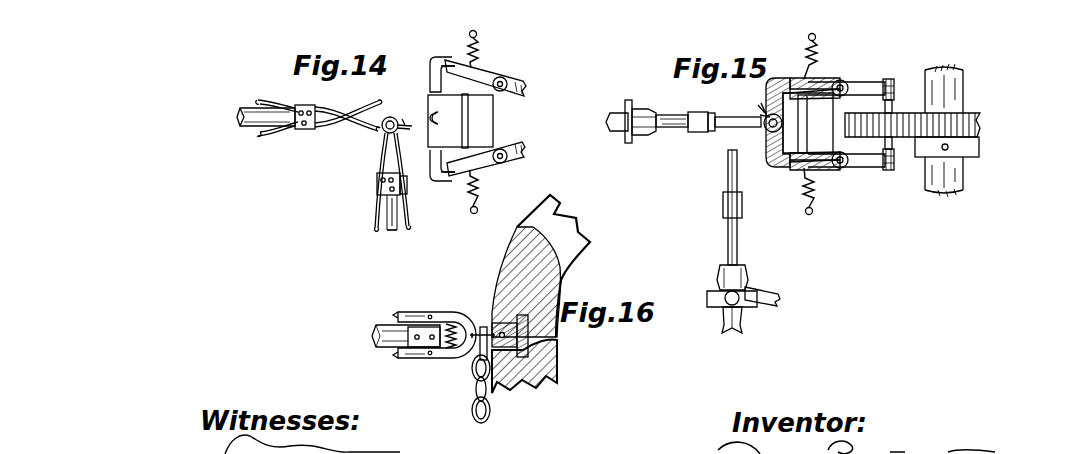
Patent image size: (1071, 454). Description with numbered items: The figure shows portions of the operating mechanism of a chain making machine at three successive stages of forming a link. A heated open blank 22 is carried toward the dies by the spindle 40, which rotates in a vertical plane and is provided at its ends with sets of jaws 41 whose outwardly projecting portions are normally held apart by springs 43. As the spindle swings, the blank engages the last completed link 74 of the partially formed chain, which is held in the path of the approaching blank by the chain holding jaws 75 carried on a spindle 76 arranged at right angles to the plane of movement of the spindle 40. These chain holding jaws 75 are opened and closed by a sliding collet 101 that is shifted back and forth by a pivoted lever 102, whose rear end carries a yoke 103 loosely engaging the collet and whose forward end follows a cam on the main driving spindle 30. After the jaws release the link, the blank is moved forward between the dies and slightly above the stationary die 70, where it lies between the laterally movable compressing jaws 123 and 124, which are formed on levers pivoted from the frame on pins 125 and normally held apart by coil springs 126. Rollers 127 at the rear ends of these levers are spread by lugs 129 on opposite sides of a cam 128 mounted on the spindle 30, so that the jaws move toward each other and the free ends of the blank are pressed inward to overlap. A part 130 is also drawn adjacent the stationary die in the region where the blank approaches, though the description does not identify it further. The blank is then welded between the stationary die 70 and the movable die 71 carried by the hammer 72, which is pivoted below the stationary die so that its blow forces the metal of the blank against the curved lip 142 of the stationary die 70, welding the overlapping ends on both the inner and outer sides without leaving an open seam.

In FIG. 14, the blank 22 is at (365, 130).
In FIG. 15, the horizontal spindle 30 is at (950, 183).
In FIG. 14, the spindle 40 is at (250, 121).
In FIG. 16, the spindle 40 is at (385, 343).
In FIG. 15, the spindle 40 is at (614, 130).
In FIG. 14, the jaws 41 is at (320, 130).
In FIG. 16, the jaws 41 is at (452, 360).
In FIG. 15, the jaws 41 is at (728, 126).
In FIG. 16, the springs 43 is at (456, 322).
In FIG. 14, the stationary die 70 is at (456, 135).
In FIG. 16, the stationary die 70 is at (520, 388).
In FIG. 15, the stationary die 70 is at (788, 160).
In FIG. 16, the movable die 71 is at (487, 328).
In FIG. 16, the hammer 72 is at (500, 277).
In FIG. 14, the last completed link 74 is at (384, 131).
In FIG. 14, the chain holding jaws 75 is at (387, 138).
In FIG. 15, the chain holding jaws 75 is at (727, 174).
In FIG. 14, the spindle 76 is at (393, 231).
In FIG. 15, the spindle 76 is at (742, 321).
In FIG. 15, the sliding collet 101 is at (720, 272).
In FIG. 15, the pivoted lever 102 is at (770, 293).
In FIG. 15, the yoke 103 is at (720, 303).
In FIG. 14, the compressing jaw 123 is at (446, 63).
In FIG. 15, the compressing jaw 123 is at (786, 76).
In FIG. 14, the compressing jaw 124 is at (441, 176).
In FIG. 15, the compressing jaw 124 is at (797, 166).
In FIG. 14, the pins 125 is at (504, 78).
In FIG. 15, the pins 125 is at (844, 82).
In FIG. 14, the coil springs 126 is at (480, 44).
In FIG. 15, the coil springs 126 is at (818, 45).
In FIG. 15, the rollers 127 is at (889, 80).
In FIG. 15, the cam 128 is at (905, 140).
In FIG. 15, the lugs 129 is at (893, 140).
In FIG. 14, the hook 130 is at (432, 116).
In FIG. 14, the curved lip 142 is at (430, 126).
In FIG. 15, the curved lip 142 is at (782, 124).